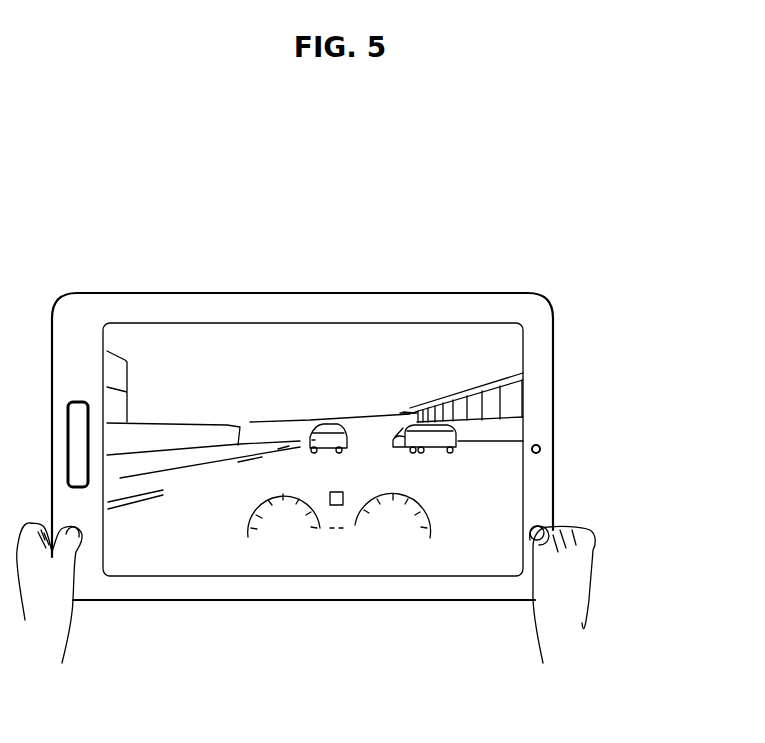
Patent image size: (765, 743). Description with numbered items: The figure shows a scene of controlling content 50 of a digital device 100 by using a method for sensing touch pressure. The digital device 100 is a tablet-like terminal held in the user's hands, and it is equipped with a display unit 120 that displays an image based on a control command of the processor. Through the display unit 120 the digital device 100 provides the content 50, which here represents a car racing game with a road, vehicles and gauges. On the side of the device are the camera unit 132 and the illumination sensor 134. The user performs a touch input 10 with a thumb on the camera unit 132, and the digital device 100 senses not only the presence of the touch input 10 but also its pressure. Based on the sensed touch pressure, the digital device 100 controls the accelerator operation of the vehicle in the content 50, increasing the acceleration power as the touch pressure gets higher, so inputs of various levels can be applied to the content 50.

The digital device 100 is at (462, 263).
The content 50 is at (213, 350).
The display unit 120 is at (293, 577).
The camera unit 132 is at (552, 525).
The illumination sensor 134 is at (540, 449).
The touch input 10 is at (563, 582).